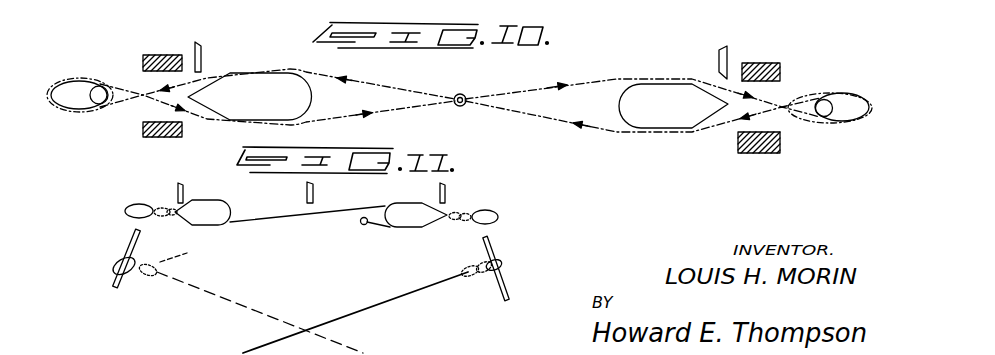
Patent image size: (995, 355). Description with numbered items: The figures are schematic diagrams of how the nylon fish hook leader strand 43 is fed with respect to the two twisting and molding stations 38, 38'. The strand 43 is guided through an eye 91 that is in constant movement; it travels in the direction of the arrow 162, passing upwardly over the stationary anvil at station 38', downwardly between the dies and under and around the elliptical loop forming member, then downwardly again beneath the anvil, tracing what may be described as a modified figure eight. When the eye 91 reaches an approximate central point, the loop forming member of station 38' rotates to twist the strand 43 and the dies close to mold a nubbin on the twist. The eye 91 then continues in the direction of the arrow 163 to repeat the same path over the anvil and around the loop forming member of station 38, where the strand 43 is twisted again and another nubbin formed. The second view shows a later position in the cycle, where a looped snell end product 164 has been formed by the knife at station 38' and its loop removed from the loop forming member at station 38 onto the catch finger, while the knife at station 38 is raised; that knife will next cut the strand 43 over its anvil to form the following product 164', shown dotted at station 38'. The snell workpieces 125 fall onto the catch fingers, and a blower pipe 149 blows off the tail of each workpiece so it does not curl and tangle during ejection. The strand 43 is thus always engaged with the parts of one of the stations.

In FIG. 10, the twisting and molding station 38 is at (818, 26).
In FIG. 11, the twisting and molding station 38 is at (516, 171).
In FIG. 10, the twisting and molding station 38' is at (110, 23).
In FIG. 11, the twisting and molding station 38' is at (98, 173).
In FIG. 10, the fish hook leader strand 43 is at (397, 90).
In FIG. 11, the fish hook leader strand 43 is at (270, 221).
In FIG. 10, the eye 91 is at (463, 94).
In FIG. 11, the eye 91 is at (362, 225).
In FIG. 11, the snell workpiece 125 is at (316, 285).
In FIG. 11, the blower pipe 149 is at (313, 198).
In FIG. 10, the arrow 162 is at (347, 78).
In FIG. 10, the arrow 163 is at (558, 83).
In FIG. 11, the looped snell end product 164 is at (355, 312).
In FIG. 11, the looped snell end product 164' is at (258, 312).